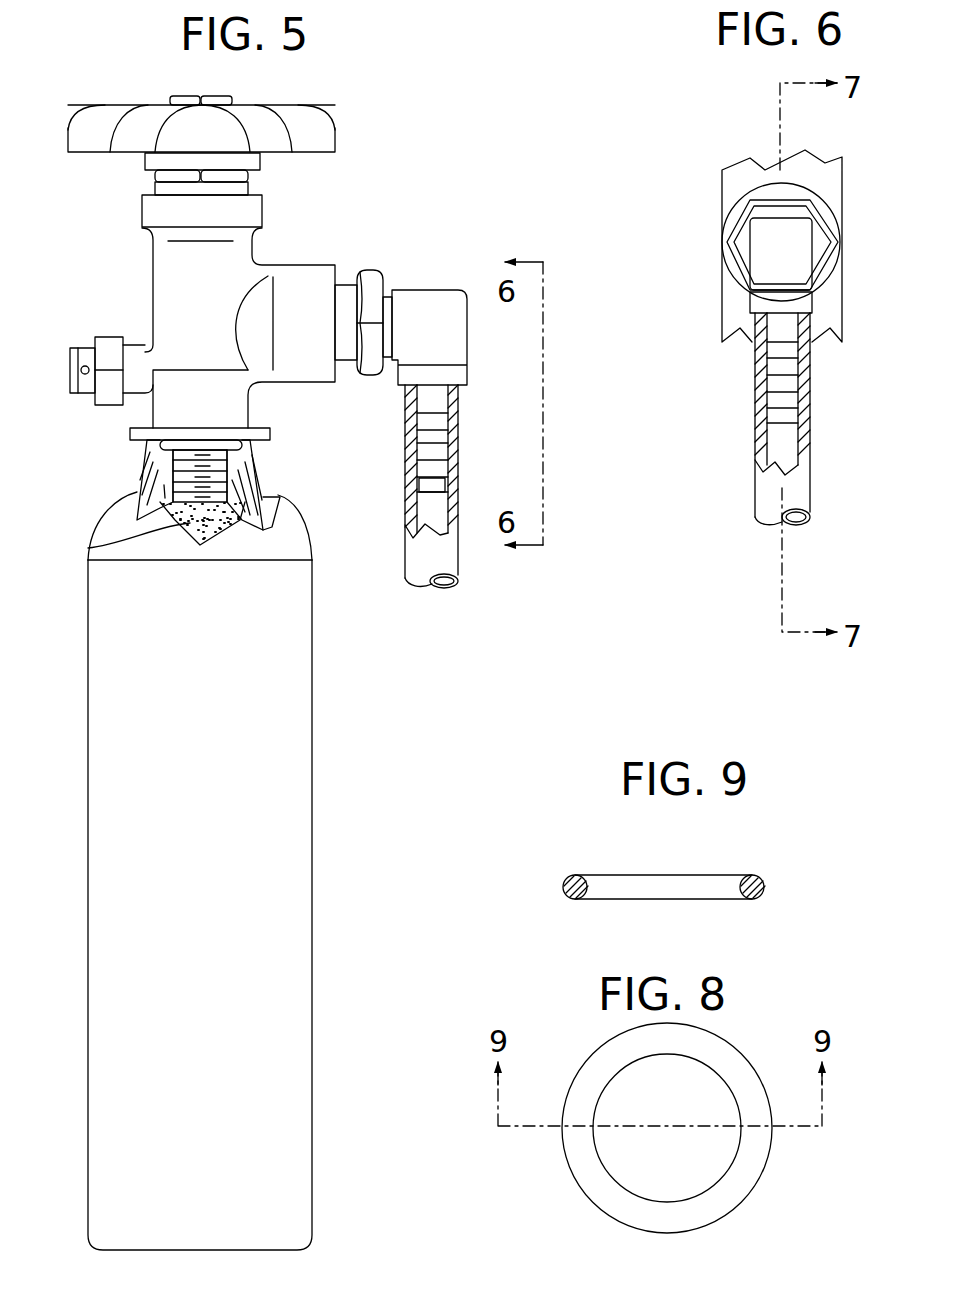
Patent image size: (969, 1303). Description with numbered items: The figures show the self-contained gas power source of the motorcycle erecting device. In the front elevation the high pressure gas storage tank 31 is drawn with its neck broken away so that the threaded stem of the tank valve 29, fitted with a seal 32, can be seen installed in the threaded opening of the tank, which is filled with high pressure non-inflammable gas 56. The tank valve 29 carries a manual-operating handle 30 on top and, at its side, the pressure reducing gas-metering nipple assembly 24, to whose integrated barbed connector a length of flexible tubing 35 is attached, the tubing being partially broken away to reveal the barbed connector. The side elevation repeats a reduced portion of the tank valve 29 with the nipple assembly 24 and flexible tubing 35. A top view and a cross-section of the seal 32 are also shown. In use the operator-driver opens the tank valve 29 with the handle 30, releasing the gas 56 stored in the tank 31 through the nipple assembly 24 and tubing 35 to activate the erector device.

In FIG. 5, the pressure reducing gas-metering nipple assembly 24 is at (430, 276).
In FIG. 6, the pressure reducing gas-metering nipple assembly 24 is at (718, 261).
In FIG. 5, the tank valve 29 is at (153, 283).
In FIG. 6, the tank valve 29 is at (842, 183).
In FIG. 5, the manual-operating handle 30 is at (335, 136).
In FIG. 5, the high pressure gas storage tank 31 is at (312, 895).
In FIG. 5, the seal 32 is at (243, 443).
In FIG. 9, the seal 32 is at (668, 875).
In FIG. 8, the seal 32 is at (588, 1167).
In FIG. 5, the flexible tubing 35 is at (460, 553).
In FIG. 6, the flexible tubing 35 is at (812, 394).
In FIG. 5, the high pressure non-inflammable gas 56 is at (88, 548).